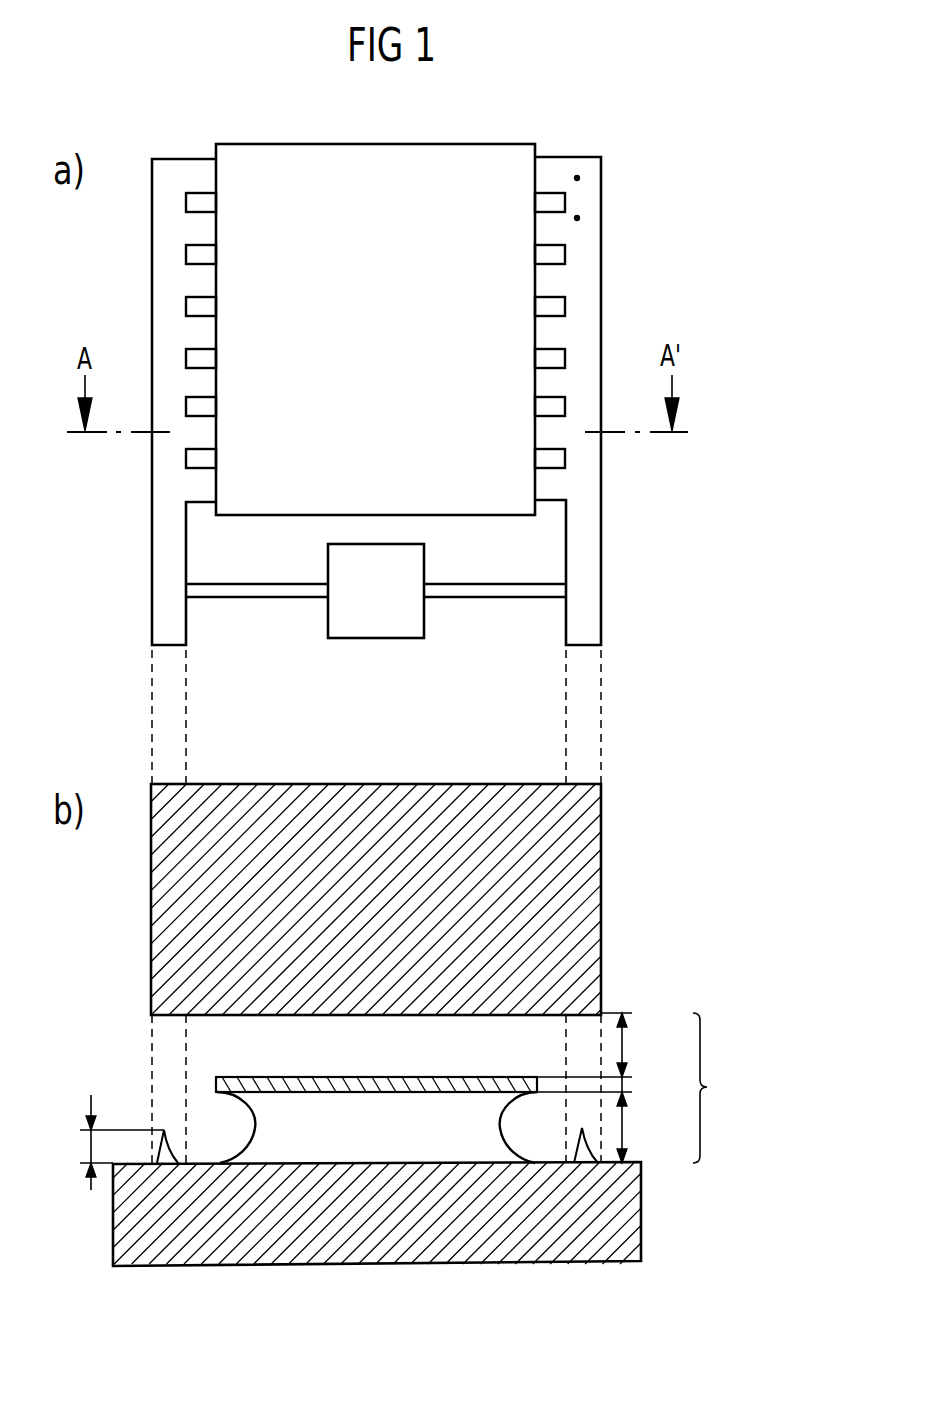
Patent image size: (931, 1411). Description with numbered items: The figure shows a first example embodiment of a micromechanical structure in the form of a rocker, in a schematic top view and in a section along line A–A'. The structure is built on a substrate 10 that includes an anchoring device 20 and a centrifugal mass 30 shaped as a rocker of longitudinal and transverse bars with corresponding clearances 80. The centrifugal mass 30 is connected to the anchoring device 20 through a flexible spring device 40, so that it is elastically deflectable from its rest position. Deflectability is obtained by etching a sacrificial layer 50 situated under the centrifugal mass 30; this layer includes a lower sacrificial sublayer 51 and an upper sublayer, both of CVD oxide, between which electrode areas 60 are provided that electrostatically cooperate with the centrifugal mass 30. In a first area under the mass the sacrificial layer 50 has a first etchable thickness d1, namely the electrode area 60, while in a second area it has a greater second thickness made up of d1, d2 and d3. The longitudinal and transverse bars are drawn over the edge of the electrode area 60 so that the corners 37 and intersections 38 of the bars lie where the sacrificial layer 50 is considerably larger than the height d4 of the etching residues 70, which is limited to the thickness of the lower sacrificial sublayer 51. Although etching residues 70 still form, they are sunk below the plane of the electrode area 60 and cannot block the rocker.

The substrate 10 is at (632, 1228).
The anchoring device 20 is at (424, 557).
The centrifugal mass 30 is at (556, 165).
The corners 37 is at (578, 178).
The intersections 38 is at (578, 218).
The flexible spring device 40 is at (250, 598).
The sacrificial layer 50 is at (718, 1088).
The lower sacrificial sublayer 51 is at (450, 1100).
The electrode area 60 is at (246, 143).
The etching residues 70 is at (172, 1142).
The clearances 80 is at (558, 300).
The first etchable thickness d1 is at (625, 1040).
The thickness d2 is at (625, 1085).
The thickness d3 is at (625, 1126).
The height of etching residues d4 is at (88, 1148).